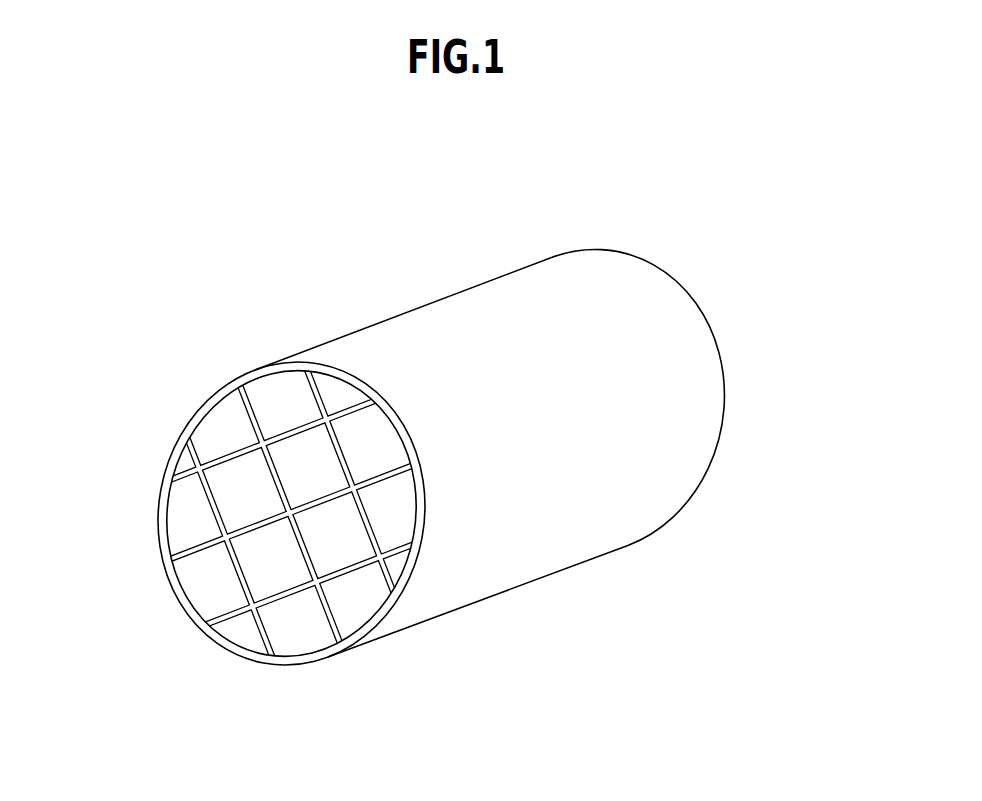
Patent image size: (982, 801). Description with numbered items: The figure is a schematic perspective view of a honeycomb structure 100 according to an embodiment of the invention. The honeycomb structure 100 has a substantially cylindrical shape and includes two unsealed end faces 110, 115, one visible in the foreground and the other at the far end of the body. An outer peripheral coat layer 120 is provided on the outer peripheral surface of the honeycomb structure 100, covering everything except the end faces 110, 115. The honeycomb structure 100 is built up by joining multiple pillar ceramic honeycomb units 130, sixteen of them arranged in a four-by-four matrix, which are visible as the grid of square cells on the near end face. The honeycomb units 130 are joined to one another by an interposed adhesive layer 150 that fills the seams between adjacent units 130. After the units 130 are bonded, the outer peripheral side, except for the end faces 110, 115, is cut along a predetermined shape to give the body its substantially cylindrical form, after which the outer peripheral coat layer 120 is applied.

The honeycomb structure 100 is at (164, 218).
The end face 110 is at (118, 498).
The end face 115 is at (705, 297).
The outer peripheral coat layer 120 is at (377, 350).
The honeycomb unit 130 is at (184, 458).
The adhesive layer 150 is at (393, 582).